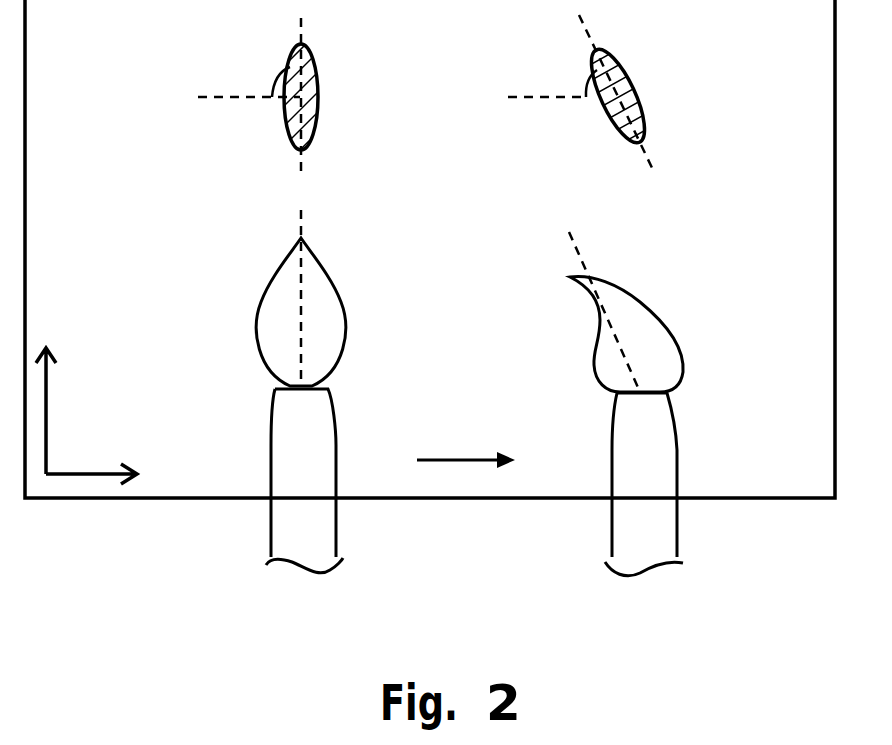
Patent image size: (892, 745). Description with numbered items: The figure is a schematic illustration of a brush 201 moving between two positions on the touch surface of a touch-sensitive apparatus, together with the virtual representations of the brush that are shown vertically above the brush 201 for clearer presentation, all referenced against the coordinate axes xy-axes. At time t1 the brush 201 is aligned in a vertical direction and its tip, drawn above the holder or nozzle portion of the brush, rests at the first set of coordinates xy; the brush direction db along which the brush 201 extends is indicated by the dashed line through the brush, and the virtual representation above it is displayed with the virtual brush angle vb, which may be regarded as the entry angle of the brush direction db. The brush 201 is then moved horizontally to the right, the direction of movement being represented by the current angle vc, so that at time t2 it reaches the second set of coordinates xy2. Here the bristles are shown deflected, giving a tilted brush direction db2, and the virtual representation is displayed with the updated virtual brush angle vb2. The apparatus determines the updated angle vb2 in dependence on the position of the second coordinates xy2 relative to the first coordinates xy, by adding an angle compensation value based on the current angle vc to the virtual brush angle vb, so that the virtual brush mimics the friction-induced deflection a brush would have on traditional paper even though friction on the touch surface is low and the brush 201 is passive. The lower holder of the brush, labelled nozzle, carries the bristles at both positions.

The brush 201 is at (350, 352).
The virtual brush angle vb is at (284, 78).
The updated virtual brush angle vb2 is at (590, 82).
The first set of coordinates xy is at (328, 119).
The second set of coordinates xy2 is at (661, 118).
The brush direction db is at (300, 325).
The brush direction at second coordinates db2 is at (617, 333).
The current angle vc is at (466, 446).
The time t1 is at (308, 626).
The time t2 is at (651, 627).
The element nozzle is at (474, 482).
The coordinate axes xy-axes is at (96, 399).